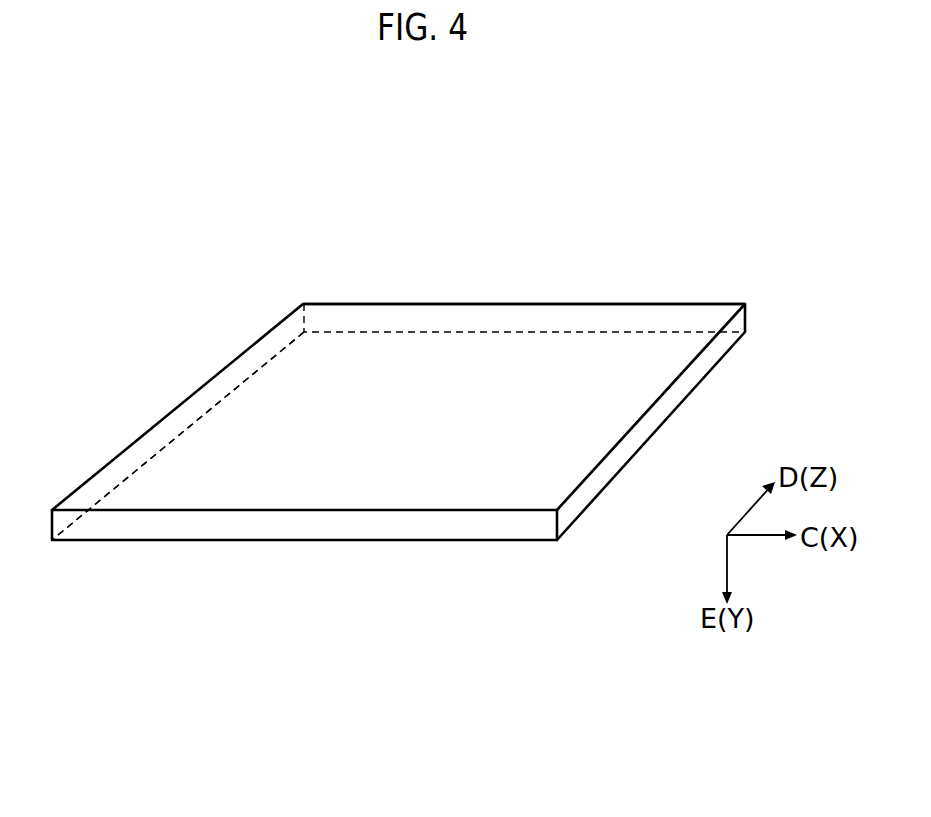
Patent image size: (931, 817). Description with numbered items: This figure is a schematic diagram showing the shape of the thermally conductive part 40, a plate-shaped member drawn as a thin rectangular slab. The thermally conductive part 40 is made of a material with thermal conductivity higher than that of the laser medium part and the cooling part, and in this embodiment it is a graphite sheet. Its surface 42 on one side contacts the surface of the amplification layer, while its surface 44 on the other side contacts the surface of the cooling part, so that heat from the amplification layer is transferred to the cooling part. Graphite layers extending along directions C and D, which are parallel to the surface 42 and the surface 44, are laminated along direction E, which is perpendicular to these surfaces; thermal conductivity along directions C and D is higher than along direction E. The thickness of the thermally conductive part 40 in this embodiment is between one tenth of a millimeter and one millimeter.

The thermally conductive part 40 is at (445, 563).
The surface on one side 42 is at (485, 318).
The surface on the other side 44 is at (352, 485).